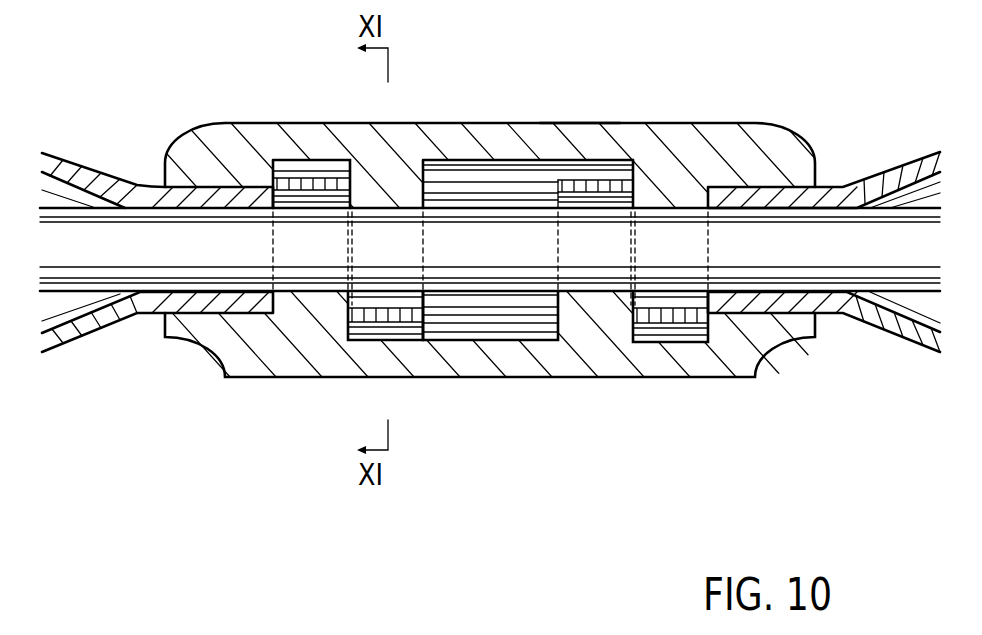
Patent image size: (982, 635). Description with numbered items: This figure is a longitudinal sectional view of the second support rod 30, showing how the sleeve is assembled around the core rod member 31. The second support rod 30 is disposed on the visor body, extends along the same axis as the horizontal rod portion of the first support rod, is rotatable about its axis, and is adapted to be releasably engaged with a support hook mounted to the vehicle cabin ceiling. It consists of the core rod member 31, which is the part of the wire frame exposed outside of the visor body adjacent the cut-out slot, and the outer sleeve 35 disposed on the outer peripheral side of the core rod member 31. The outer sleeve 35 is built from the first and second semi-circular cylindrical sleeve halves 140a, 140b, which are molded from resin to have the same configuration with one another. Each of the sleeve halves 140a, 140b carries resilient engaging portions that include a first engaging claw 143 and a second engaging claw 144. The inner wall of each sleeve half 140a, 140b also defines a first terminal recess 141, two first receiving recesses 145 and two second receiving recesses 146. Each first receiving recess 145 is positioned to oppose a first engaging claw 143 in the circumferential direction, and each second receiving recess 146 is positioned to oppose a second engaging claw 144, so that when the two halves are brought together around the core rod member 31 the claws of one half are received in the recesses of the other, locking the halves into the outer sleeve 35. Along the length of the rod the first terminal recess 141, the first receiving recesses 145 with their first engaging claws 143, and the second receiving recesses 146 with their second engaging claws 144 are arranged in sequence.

The second support rod 30 is at (528, 174).
The core rod member 31 is at (512, 232).
The outer sleeve 35 is at (581, 120).
The first semi-circular cylindrical sleeve half 140a is at (500, 370).
The second semi-circular cylindrical sleeve half 140b is at (467, 130).
The first terminal recess 141 is at (168, 316).
The first engaging claw 143 is at (292, 190).
The second engaging claw 144 is at (378, 300).
The first receiving recess 145 is at (320, 168).
The second receiving recess 146 is at (397, 330).